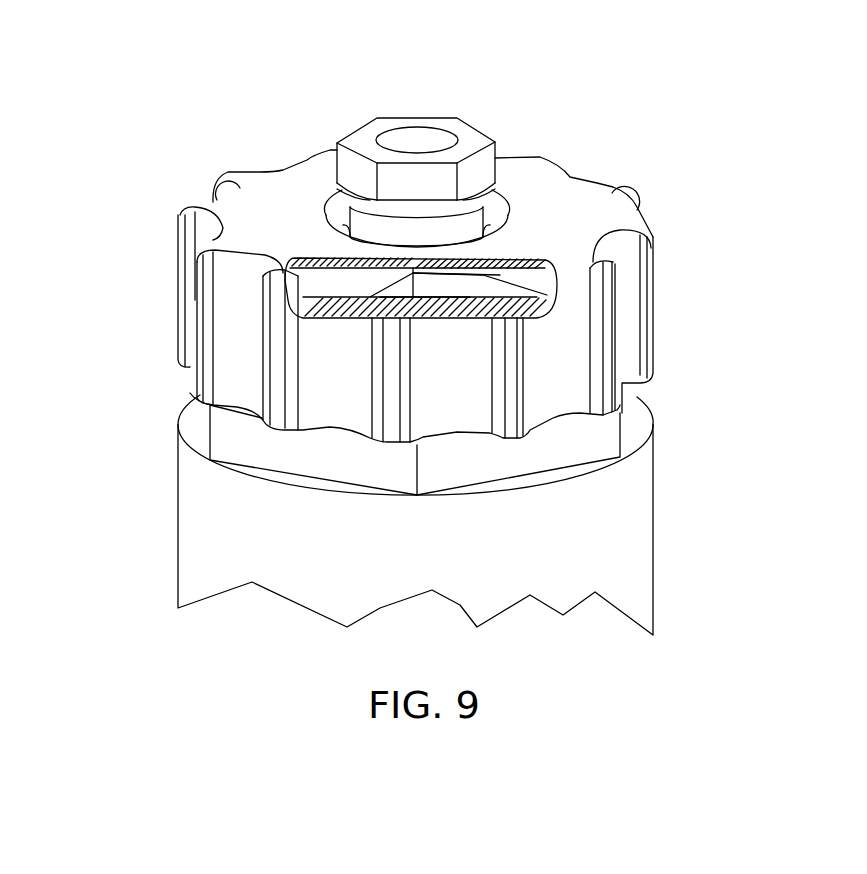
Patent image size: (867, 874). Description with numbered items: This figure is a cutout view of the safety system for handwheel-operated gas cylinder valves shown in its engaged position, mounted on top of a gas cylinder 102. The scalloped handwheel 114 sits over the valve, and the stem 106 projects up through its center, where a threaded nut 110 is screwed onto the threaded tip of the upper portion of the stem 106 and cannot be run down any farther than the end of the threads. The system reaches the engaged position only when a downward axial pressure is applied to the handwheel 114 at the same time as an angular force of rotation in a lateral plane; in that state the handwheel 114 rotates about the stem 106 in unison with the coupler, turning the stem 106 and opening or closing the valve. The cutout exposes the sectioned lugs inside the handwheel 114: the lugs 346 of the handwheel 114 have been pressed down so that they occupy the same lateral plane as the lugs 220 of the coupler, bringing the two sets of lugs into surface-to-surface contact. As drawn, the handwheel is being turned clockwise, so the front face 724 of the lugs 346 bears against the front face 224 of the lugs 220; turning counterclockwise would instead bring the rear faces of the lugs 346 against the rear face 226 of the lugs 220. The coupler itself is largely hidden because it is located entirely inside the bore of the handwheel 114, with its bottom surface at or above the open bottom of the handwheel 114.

The gas cylinder 102 is at (177, 580).
The stem 106 is at (405, 148).
The threaded nut 110 is at (462, 130).
The handwheel 114 is at (178, 304).
The lugs of the coupler 220 is at (395, 300).
The front face of the lug of the coupler 224 is at (480, 300).
The rear face of the lug of the coupler 226 is at (535, 285).
The lugs of the handwheel 346 is at (420, 267).
The front face of the lug of the handwheel 724 is at (240, 195).